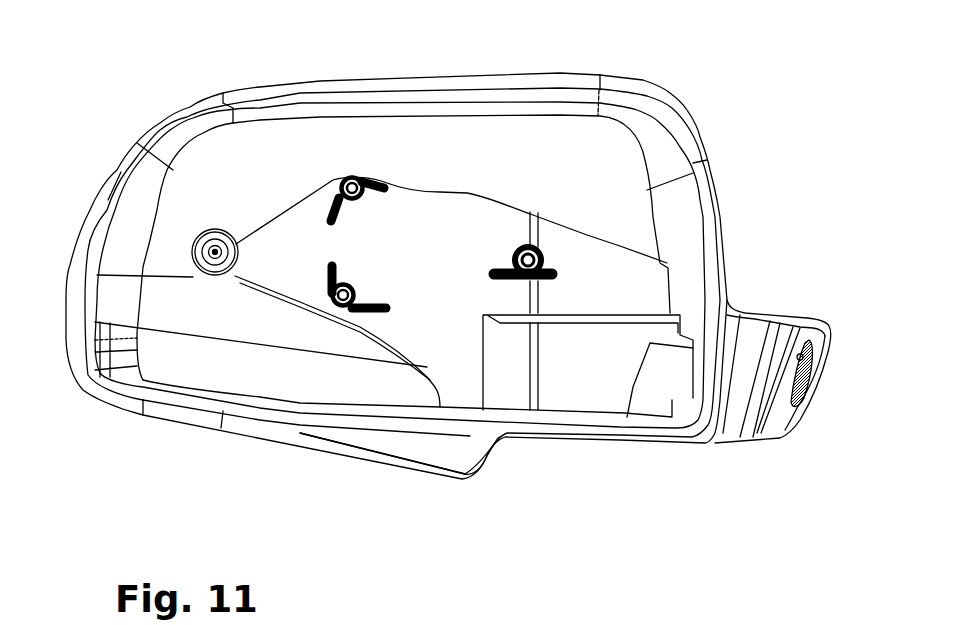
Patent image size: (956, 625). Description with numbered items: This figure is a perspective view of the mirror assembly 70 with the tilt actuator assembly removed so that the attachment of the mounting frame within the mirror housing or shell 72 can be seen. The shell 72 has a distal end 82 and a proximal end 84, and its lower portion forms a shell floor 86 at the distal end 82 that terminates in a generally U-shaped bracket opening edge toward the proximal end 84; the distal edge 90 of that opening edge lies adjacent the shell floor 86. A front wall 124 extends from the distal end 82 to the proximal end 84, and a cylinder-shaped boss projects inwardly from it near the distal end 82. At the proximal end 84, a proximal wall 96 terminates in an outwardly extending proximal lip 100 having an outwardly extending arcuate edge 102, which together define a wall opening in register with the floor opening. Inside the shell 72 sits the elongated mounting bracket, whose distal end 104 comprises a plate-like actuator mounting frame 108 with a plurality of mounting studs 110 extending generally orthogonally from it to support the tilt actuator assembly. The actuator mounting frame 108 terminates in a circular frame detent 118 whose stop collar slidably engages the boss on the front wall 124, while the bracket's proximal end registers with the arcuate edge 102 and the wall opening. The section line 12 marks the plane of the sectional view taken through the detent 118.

The mirror housing or shell 72 is at (347, 82).
The distal end 82 is at (90, 328).
The proximal end 84 is at (723, 270).
The shell floor 86 is at (418, 462).
The distal edge 90 is at (480, 460).
The proximal wall 96 is at (703, 182).
The proximal lip 100 is at (763, 320).
The arcuate edge 102 is at (817, 317).
The distal end 104 is at (267, 253).
The actuator mounting frame 108 is at (480, 243).
The mounting studs 110 is at (360, 183).
The circular frame detent 118 is at (193, 240).
The front wall 124 is at (473, 157).
The section line 12- 12 is at (215, 488).
The mirror assembly 70 is at (625, 621).